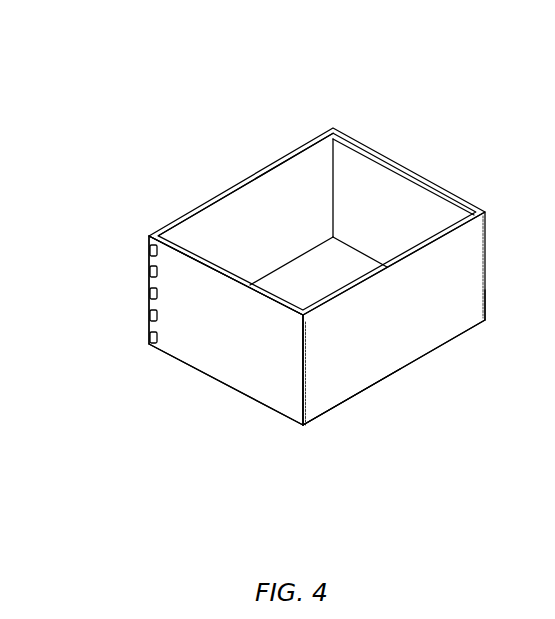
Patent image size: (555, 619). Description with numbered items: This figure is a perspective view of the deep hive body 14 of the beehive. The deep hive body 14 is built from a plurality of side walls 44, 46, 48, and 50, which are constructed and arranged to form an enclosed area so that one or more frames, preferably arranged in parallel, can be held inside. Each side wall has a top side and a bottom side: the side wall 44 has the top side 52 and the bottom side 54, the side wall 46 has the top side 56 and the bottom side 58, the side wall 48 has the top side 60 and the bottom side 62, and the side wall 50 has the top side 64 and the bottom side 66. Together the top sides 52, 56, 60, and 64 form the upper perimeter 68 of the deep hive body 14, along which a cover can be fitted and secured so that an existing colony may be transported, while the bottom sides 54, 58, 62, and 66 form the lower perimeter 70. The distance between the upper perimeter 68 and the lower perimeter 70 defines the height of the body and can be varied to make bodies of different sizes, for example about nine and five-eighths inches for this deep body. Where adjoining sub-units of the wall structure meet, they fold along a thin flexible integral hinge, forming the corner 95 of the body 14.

The deep hive body 14 is at (175, 140).
The side wall 44 is at (200, 362).
The side wall 46 is at (472, 290).
The side wall 48 is at (428, 202).
The side wall 50 is at (250, 195).
The top side 52 is at (188, 258).
The bottom side 54 is at (165, 353).
The top side 56 is at (485, 213).
The bottom side 58 is at (473, 323).
The top side 60 is at (400, 165).
The bottom side 62 is at (353, 243).
The top side 64 is at (297, 155).
The bottom side 66 is at (300, 255).
The upper perimeter 68 is at (178, 220).
The lower perimeter 70 is at (327, 410).
The corner 95 is at (304, 405).